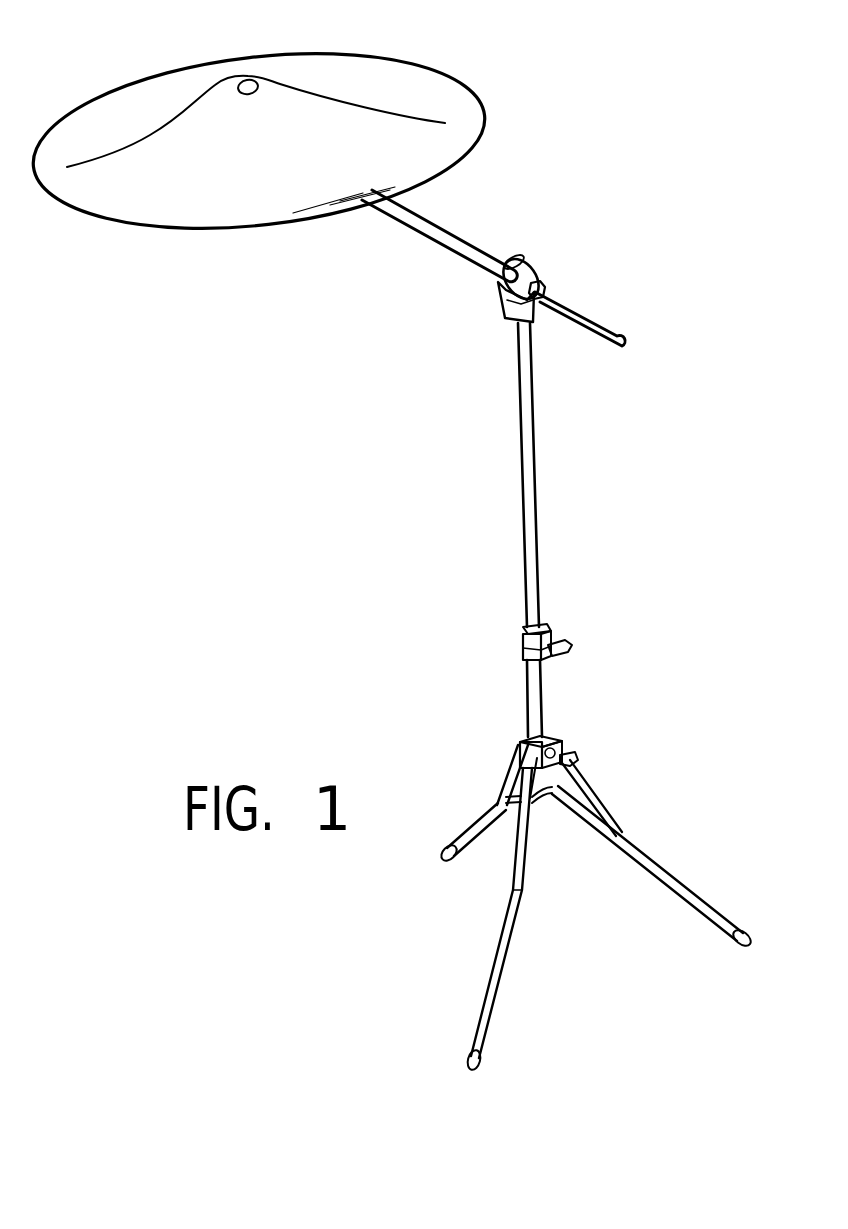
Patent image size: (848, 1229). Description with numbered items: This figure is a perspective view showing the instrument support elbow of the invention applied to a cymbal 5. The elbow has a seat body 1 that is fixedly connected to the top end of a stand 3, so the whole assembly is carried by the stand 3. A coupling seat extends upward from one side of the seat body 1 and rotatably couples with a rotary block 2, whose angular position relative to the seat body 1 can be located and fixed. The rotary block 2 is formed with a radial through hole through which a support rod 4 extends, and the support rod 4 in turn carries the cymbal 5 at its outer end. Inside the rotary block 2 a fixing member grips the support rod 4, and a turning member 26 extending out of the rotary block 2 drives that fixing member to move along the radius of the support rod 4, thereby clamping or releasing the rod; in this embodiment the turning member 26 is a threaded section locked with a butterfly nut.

The seat body 1 is at (513, 317).
The rotary block 2 is at (528, 260).
The turning member 26 is at (555, 281).
The stand 3 is at (532, 495).
The support rod 4 is at (453, 248).
The cymbal 5 is at (430, 80).